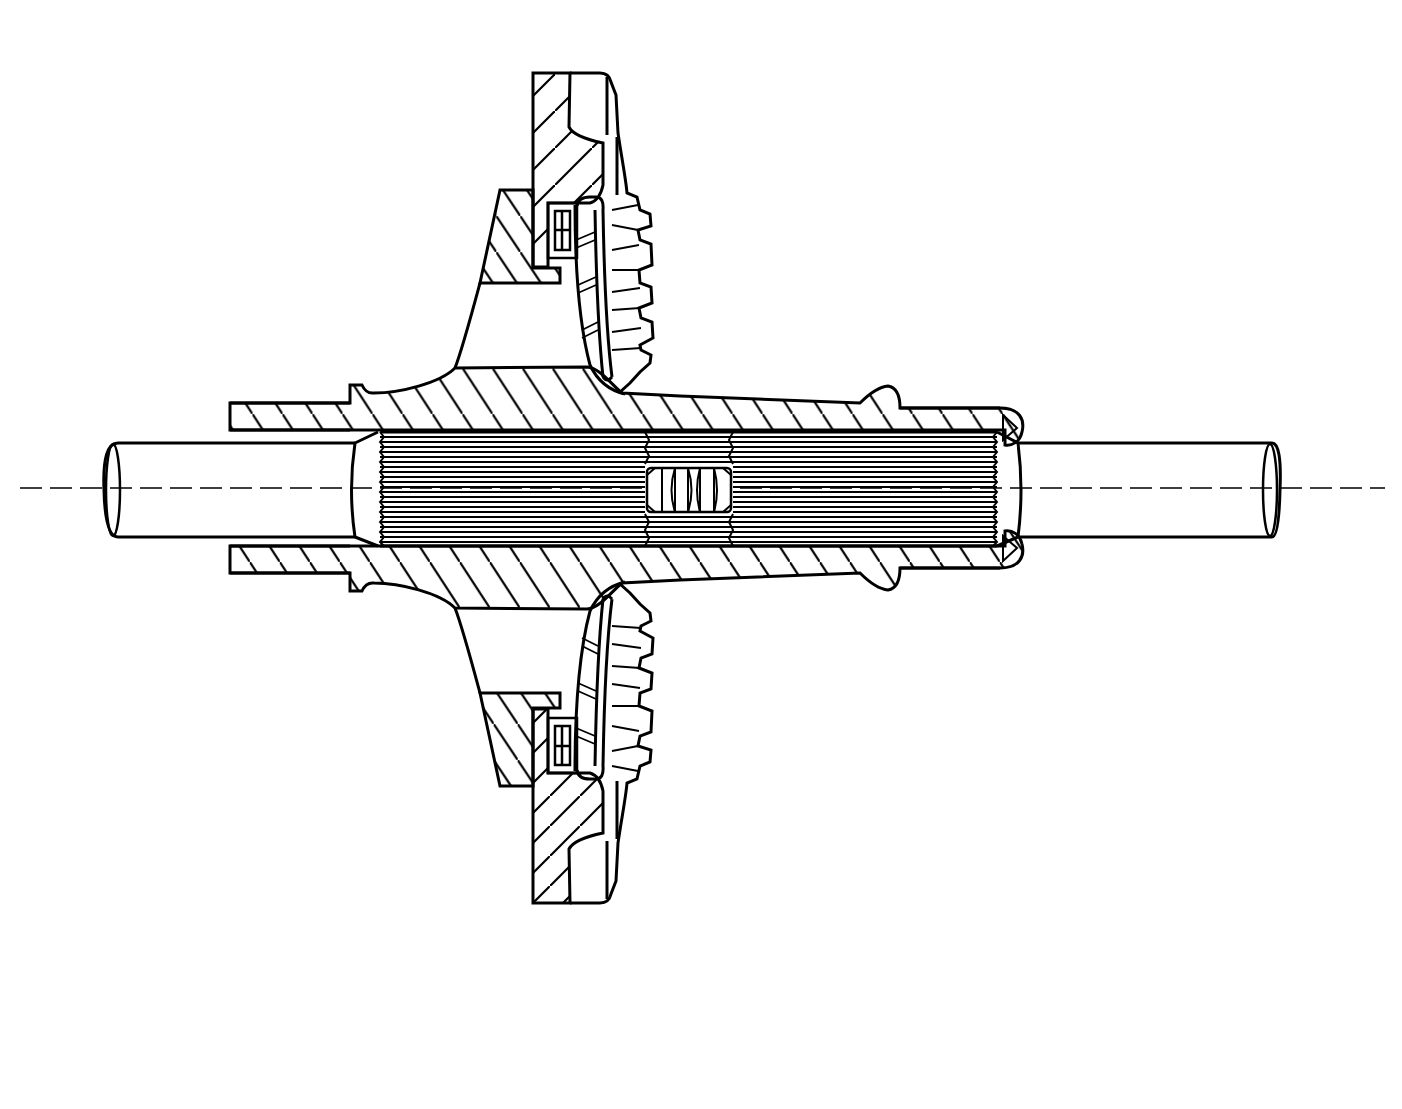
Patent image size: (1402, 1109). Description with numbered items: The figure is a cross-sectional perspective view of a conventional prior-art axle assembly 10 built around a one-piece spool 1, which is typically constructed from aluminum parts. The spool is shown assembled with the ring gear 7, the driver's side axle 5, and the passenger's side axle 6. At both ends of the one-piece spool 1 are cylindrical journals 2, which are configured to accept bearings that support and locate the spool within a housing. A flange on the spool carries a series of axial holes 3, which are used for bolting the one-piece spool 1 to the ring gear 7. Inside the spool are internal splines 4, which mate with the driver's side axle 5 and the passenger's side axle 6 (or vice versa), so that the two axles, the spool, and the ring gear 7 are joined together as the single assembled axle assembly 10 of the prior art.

The axle assembly 10 is at (202, 138).
The one-piece spool 1 is at (703, 395).
The cylindrical journals 2 is at (268, 400).
The axial holes 3 is at (522, 243).
The internal splines 4 is at (702, 556).
The driver's side axle 5 is at (177, 536).
The passenger's side axle 6 is at (1100, 534).
The ring gear 7 is at (648, 724).